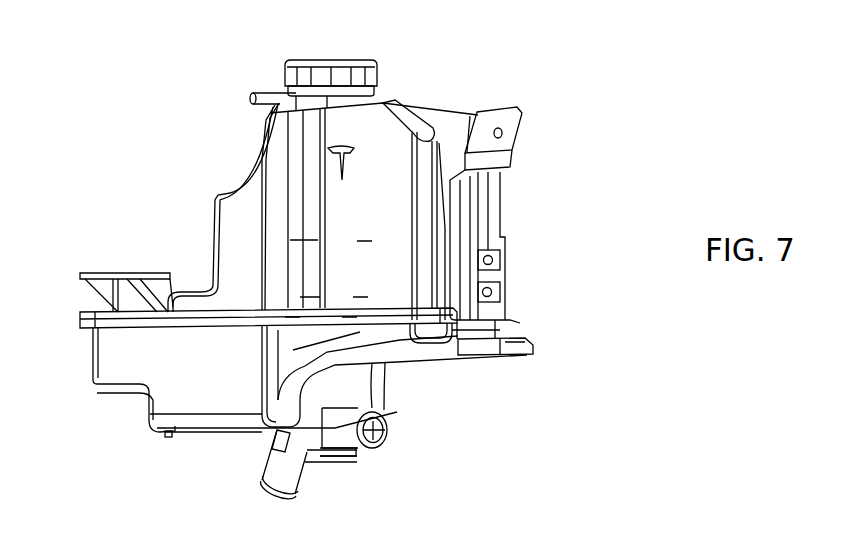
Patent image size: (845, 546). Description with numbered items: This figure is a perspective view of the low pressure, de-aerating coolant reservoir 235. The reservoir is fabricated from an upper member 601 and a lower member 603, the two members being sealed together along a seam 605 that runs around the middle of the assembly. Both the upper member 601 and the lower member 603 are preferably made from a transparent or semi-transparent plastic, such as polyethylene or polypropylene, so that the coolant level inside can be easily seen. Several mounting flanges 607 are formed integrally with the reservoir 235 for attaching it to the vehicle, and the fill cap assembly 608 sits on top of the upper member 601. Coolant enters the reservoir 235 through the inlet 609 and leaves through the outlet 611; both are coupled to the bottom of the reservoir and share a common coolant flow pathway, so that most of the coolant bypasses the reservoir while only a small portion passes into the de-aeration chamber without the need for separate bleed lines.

The coolant reservoir 235 is at (606, 163).
The upper member 601 is at (237, 233).
The lower member 603 is at (183, 395).
The seam 605 is at (200, 320).
The mounting flanges 607 is at (505, 132).
The fill cap assembly 608 is at (317, 63).
The inlet 609 is at (290, 477).
The outlet 611 is at (385, 430).